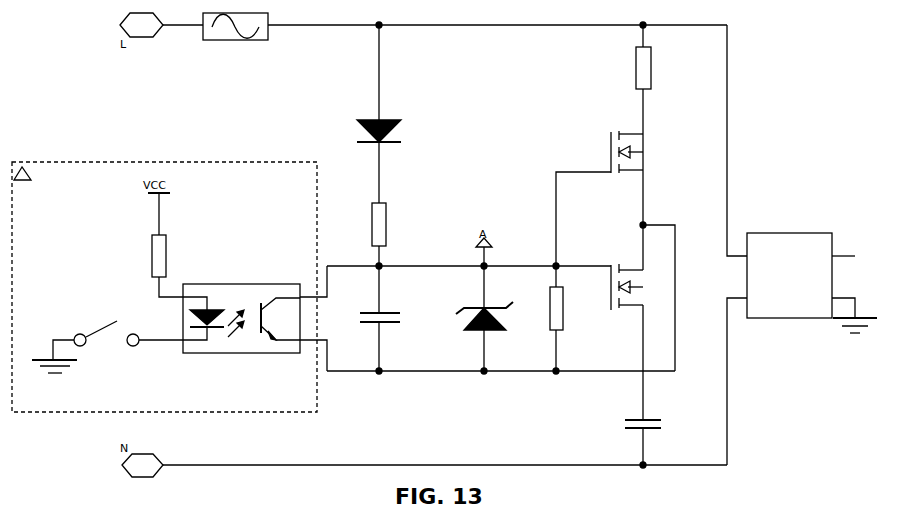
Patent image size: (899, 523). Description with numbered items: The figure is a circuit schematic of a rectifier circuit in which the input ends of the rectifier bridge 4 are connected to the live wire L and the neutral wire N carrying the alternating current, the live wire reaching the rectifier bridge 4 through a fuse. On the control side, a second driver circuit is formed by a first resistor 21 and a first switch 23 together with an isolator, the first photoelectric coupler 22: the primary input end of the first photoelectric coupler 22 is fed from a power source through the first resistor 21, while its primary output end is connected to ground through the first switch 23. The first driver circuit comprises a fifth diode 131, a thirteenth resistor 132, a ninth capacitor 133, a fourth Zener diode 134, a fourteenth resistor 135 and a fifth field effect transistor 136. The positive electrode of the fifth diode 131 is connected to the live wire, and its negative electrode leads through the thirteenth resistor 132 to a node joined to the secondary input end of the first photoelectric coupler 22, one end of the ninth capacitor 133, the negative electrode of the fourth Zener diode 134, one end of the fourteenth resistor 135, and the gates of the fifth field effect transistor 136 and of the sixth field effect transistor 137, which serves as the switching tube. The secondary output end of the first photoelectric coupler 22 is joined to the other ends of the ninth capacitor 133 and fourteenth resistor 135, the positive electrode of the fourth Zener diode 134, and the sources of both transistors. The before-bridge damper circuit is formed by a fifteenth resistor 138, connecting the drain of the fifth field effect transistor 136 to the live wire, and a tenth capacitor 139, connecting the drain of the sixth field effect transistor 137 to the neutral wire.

The rectifier bridge 4 is at (790, 233).
The first resistor 21 is at (167, 256).
The first photoelectric coupler 22 is at (241, 312).
The first switch 23 is at (107, 352).
The fifth diode 131 is at (391, 131).
The thirteenth resistor 132 is at (392, 224).
The ninth capacitor 133 is at (392, 318).
The fourth Zener diode 134 is at (492, 318).
The fourteenth resistor 135 is at (568, 318).
The fifth field effect transistor 136 is at (639, 152).
The sixth field effect transistor 137 is at (639, 287).
The fifteenth resistor 138 is at (656, 79).
The tenth capacitor 139 is at (656, 442).